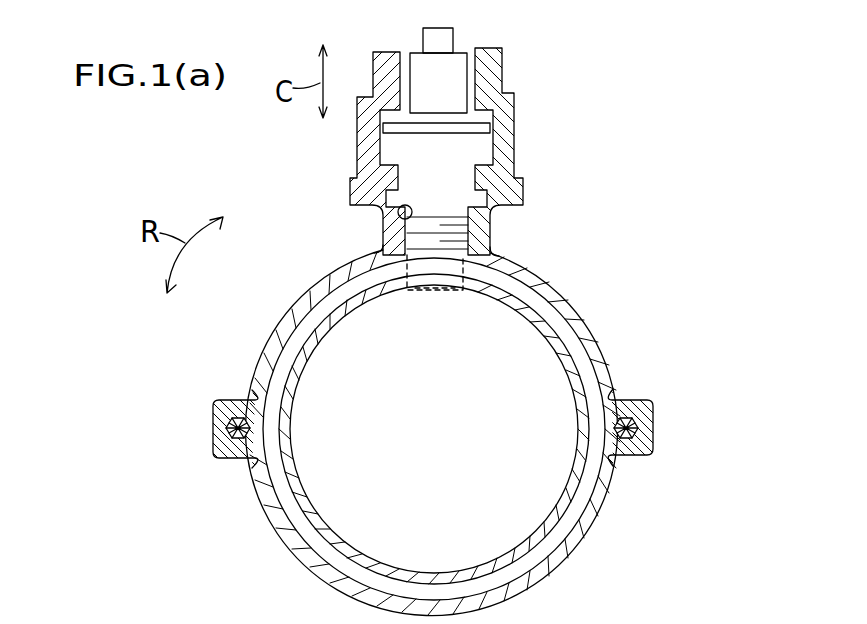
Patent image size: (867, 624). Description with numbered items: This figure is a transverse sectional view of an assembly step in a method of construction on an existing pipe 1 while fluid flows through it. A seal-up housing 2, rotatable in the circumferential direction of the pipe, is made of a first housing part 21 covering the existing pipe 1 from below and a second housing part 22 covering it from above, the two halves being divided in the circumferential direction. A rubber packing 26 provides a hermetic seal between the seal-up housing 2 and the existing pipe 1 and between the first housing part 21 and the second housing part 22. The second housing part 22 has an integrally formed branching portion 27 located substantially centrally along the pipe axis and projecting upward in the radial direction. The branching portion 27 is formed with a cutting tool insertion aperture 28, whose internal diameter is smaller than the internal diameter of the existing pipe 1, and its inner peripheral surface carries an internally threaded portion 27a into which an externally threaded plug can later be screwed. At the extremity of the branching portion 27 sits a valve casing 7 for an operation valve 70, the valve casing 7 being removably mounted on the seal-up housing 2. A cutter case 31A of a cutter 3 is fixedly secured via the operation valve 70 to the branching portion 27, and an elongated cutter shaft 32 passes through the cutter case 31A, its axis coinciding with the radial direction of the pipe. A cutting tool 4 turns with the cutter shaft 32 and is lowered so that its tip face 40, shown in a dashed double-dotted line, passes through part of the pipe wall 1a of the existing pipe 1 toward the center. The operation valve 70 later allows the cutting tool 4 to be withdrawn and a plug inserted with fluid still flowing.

The existing straight pipe 1 is at (425, 575).
The pipe wall 1a is at (367, 299).
The seal-up housing 2 is at (226, 525).
The first housing part 21 is at (305, 553).
The second housing part 22 is at (293, 315).
The rubber packing 26 is at (238, 420).
The branching portion 27 is at (480, 237).
The internally threaded portion 27a is at (400, 212).
The cutting tool insertion aperture 28 is at (490, 197).
The cutter 3 is at (545, 58).
The cutter case 31A is at (500, 80).
The cutter shaft 32 is at (437, 40).
The cutting tool 4 is at (453, 72).
The tip face 40 is at (420, 292).
The valve casing 7 is at (357, 152).
The operation valve 70 is at (507, 152).